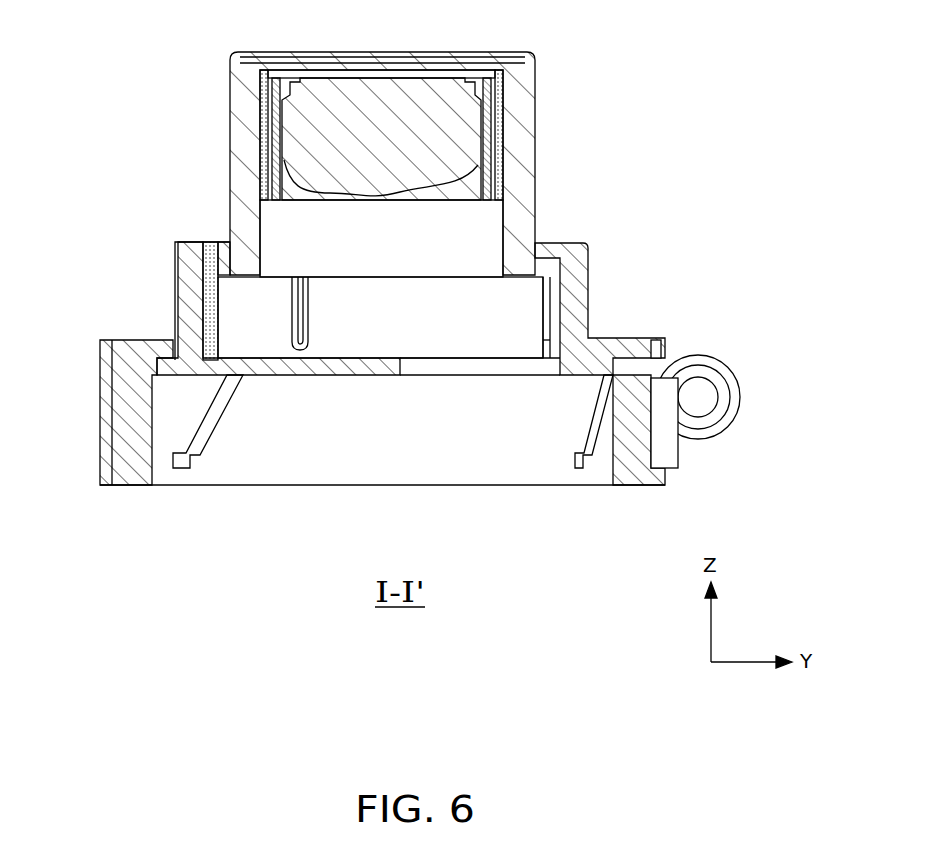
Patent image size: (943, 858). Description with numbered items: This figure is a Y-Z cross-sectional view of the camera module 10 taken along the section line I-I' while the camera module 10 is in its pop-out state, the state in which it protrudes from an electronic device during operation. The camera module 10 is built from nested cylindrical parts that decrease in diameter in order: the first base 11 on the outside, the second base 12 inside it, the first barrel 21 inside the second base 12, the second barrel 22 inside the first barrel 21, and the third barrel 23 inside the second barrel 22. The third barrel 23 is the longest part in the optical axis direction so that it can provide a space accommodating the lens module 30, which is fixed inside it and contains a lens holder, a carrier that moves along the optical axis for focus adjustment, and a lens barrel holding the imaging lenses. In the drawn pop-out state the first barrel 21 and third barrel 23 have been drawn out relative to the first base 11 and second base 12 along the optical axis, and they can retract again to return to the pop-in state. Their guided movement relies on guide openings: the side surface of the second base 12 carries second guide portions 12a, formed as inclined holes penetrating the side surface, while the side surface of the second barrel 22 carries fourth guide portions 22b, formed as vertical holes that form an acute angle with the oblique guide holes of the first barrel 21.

The camera module 10 is at (697, 357).
The first base 11 is at (120, 397).
The second base 12 is at (460, 468).
The second guide portion 12a is at (215, 418).
The first barrel 21 is at (185, 288).
The second barrel 22 is at (553, 250).
The fourth guide portion 22b is at (298, 327).
The third barrel 23 is at (522, 118).
The lens module 30 is at (256, 72).